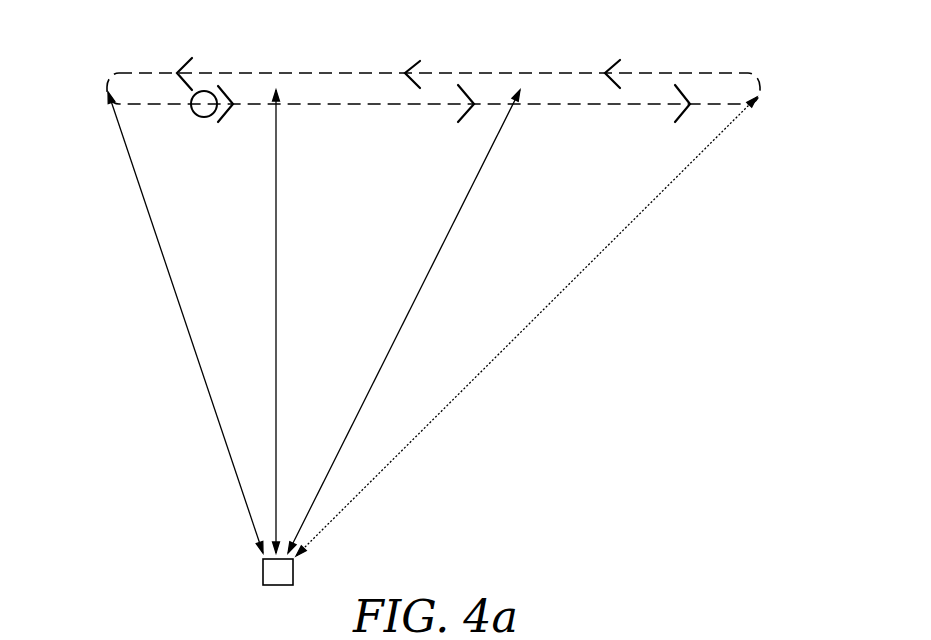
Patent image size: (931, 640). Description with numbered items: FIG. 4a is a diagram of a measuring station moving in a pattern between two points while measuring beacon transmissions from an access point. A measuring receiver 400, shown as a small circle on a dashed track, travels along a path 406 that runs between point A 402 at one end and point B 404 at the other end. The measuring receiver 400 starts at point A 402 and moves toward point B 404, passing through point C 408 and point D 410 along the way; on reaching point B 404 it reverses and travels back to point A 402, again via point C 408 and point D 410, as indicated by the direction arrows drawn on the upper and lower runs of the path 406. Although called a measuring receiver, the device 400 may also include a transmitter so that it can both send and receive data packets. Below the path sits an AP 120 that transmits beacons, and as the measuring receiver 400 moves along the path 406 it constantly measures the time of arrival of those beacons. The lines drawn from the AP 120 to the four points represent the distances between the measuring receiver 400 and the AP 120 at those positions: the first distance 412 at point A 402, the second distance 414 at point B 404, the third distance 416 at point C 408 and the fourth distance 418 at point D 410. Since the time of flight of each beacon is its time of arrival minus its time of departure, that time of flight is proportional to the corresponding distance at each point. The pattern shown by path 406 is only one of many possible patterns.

The AP 120 is at (263, 570).
The measuring receiver 400 is at (204, 117).
The point A 402 is at (78, 82).
The point B 404 is at (778, 73).
The path 406 is at (158, 73).
The point C 408 is at (270, 73).
The point D 410 is at (518, 73).
The distance d1 412 is at (167, 272).
The distance d2 414 is at (588, 262).
The distance d3 416 is at (276, 258).
The distance d4 418 is at (432, 268).